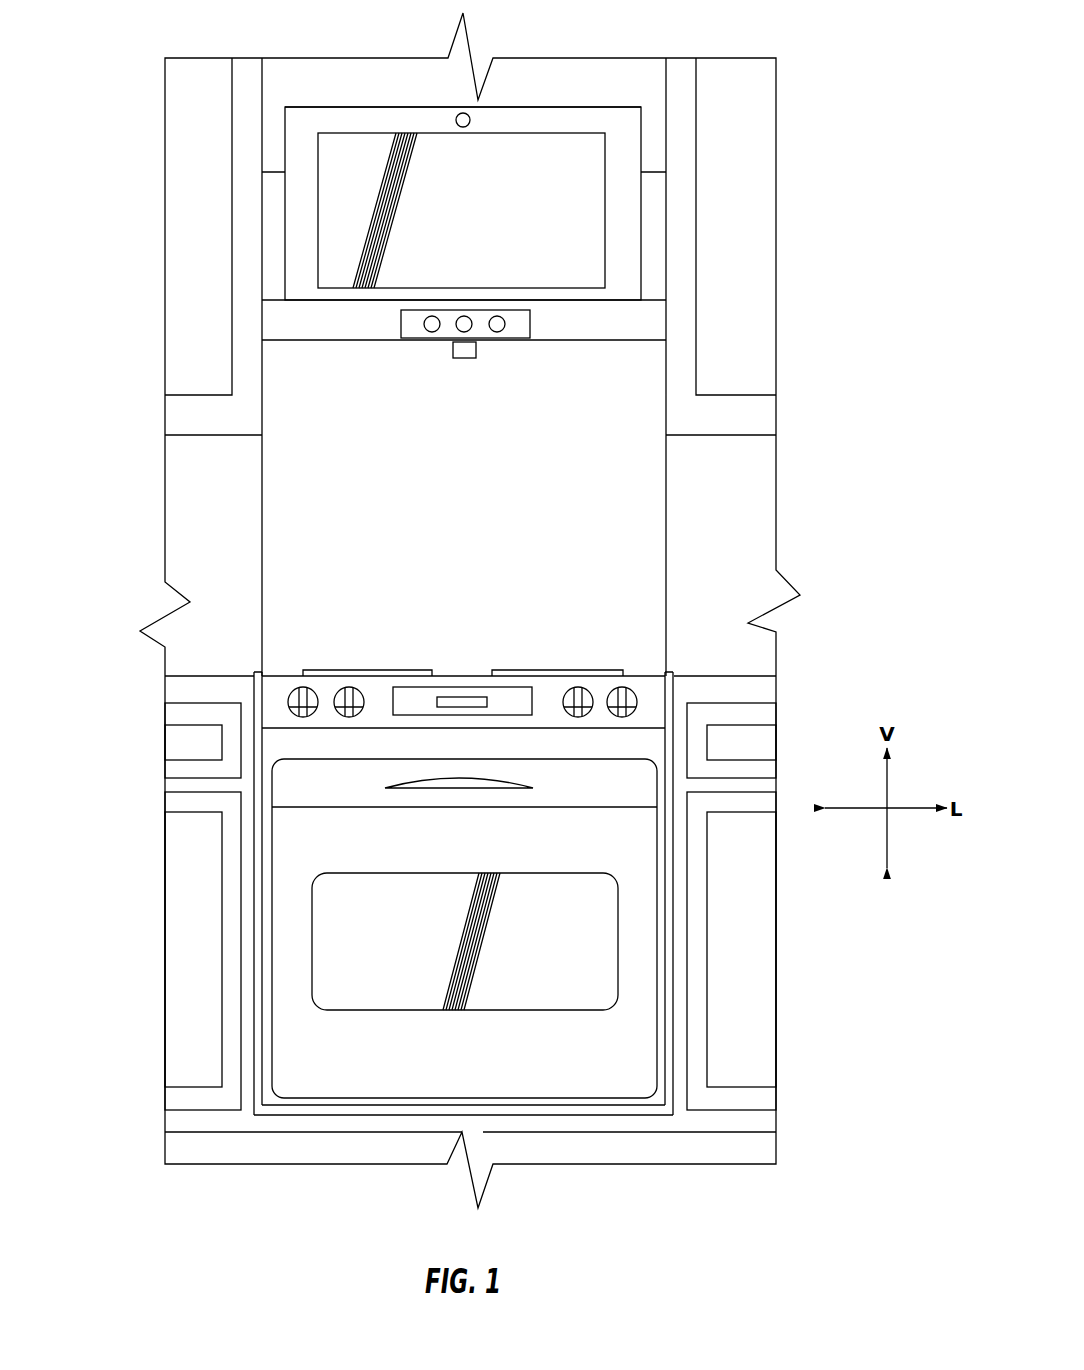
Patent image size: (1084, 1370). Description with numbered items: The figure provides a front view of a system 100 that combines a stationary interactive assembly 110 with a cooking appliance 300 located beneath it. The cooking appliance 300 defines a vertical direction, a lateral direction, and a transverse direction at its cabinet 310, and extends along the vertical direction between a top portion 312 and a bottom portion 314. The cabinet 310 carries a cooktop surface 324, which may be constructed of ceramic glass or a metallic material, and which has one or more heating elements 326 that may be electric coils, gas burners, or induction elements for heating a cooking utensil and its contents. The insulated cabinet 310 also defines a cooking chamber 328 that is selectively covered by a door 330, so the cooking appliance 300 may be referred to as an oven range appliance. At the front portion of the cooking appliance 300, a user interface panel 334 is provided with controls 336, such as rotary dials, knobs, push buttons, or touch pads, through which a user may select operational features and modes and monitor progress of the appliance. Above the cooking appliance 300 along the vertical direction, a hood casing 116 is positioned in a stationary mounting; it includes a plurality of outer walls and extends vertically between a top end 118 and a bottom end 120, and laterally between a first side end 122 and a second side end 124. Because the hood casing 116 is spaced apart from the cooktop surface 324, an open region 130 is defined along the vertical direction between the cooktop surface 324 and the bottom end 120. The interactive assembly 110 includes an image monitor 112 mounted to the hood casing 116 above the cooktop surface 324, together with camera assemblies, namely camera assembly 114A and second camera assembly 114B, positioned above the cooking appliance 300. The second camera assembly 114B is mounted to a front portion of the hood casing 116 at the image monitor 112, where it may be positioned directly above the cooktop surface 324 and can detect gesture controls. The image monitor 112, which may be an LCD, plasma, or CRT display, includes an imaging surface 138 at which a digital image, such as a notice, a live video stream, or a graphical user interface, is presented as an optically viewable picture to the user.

The system 100 is at (105, 120).
The interactive assembly 110 is at (648, 218).
The image monitor 112 is at (623, 133).
The camera assembly 114A is at (463, 360).
The second camera assembly 114B is at (470, 120).
The hood casing 116 is at (640, 322).
The top end 118 is at (388, 100).
The bottom end 120 is at (567, 346).
The first side end 122 is at (667, 287).
The second side end 124 is at (260, 272).
The open region 130 is at (370, 513).
The imaging surface 138 is at (338, 220).
The cooking appliance 300 is at (245, 922).
The cabinet 310 is at (255, 1105).
The top portion 312 is at (254, 670).
The bottom portion 314 is at (310, 1120).
The cooktop surface 324 is at (286, 670).
The heating elements 326 is at (368, 668).
The cooking chamber 328 is at (369, 946).
The door 330 is at (647, 937).
The user interface panel 334 is at (650, 687).
The controls 336 is at (647, 688).